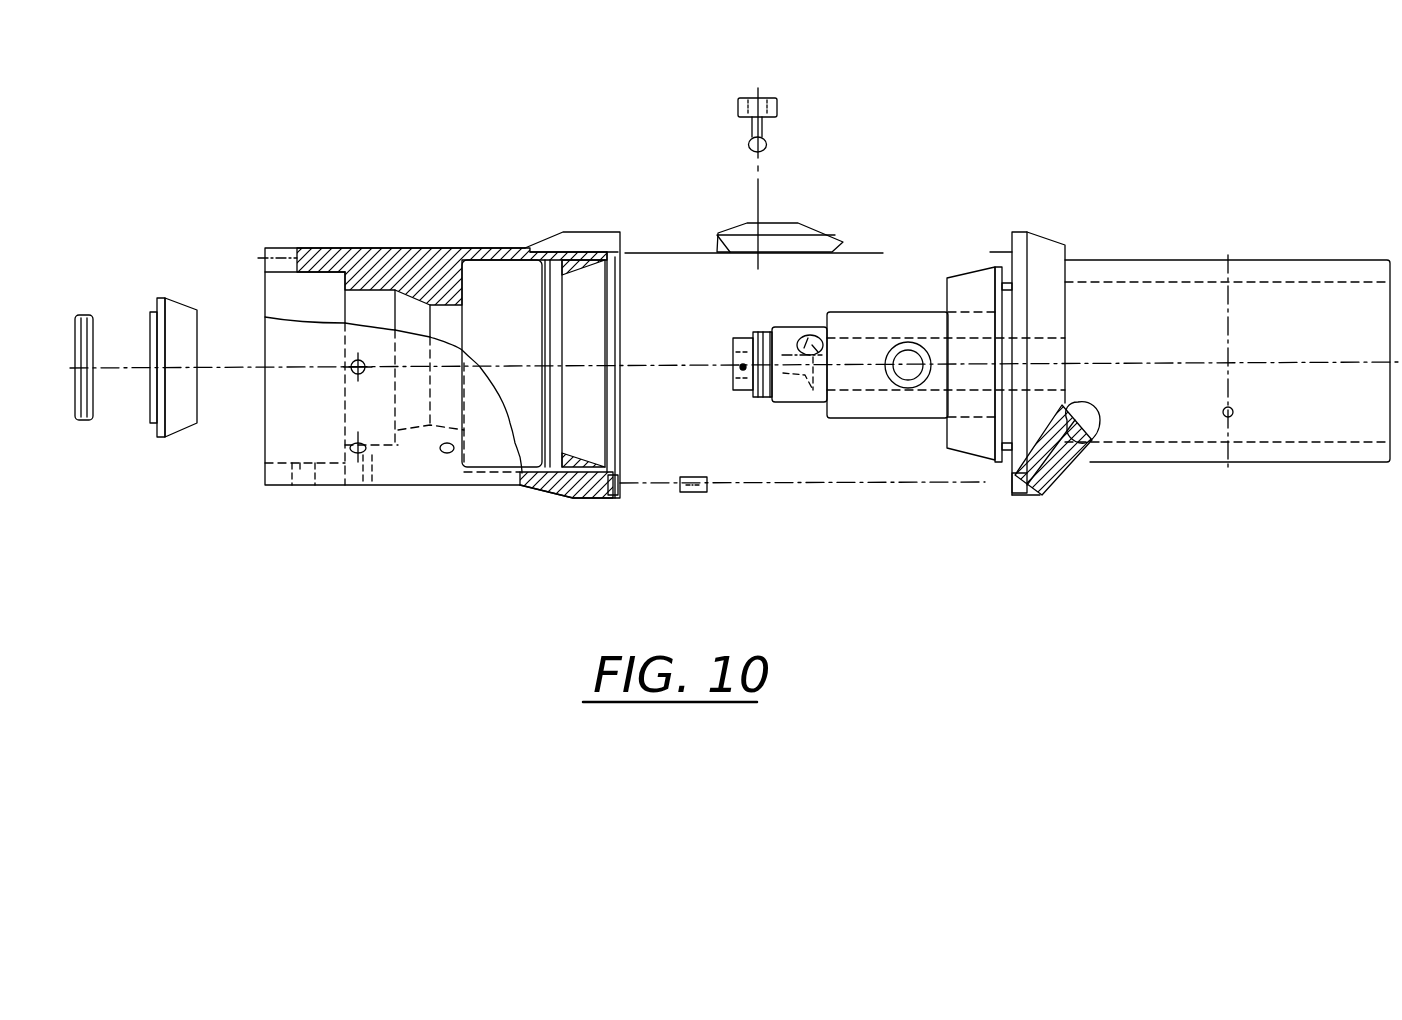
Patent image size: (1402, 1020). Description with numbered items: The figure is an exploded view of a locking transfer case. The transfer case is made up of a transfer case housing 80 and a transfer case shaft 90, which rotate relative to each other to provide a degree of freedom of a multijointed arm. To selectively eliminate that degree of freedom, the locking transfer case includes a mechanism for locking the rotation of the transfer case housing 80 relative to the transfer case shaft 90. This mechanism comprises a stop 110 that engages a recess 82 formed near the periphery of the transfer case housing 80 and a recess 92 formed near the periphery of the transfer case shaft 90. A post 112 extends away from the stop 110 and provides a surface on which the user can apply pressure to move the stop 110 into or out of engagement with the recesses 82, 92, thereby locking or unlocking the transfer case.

The transfer case housing 80 is at (433, 490).
The recess 82 is at (612, 243).
The transfer case shaft 90 is at (1303, 467).
The recess 92 is at (1012, 245).
The stop 110 is at (815, 223).
The post 112 is at (772, 98).